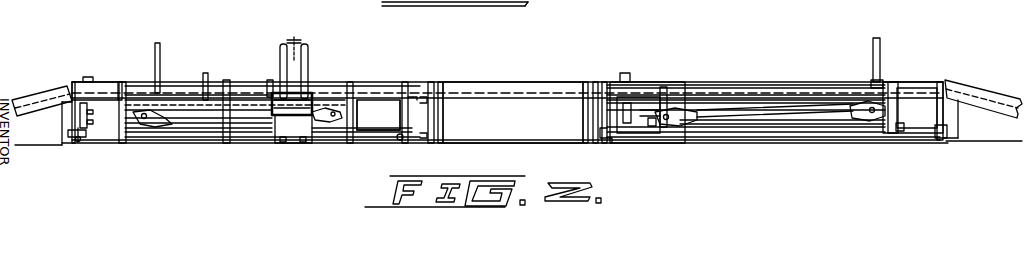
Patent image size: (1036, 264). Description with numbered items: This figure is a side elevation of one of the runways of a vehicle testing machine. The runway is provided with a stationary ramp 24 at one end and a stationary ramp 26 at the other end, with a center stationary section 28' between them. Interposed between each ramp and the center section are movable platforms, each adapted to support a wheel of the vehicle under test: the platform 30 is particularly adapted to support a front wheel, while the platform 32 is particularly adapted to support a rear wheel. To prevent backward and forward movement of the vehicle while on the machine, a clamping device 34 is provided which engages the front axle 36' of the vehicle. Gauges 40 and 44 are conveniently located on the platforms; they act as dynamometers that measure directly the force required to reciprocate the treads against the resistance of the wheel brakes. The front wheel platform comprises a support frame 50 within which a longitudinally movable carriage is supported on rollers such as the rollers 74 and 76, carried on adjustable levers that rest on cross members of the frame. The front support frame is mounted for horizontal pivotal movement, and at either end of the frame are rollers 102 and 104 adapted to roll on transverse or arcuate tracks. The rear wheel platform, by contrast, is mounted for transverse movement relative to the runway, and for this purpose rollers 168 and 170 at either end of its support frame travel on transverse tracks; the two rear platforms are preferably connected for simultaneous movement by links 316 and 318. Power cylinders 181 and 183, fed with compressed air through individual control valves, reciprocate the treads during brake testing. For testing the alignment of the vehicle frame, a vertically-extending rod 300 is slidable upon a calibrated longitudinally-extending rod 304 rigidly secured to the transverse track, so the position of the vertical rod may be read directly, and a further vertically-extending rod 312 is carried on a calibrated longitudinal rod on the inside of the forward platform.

The stationary ramp 24 is at (35, 100).
The gauge 40 is at (93, 77).
The vertically-extending rod 312 is at (162, 53).
The platform 30 is at (185, 97).
The front axle 36' is at (308, 35).
The clamping device 34 is at (310, 73).
The center stationary section 28' is at (513, 93).
The gauge 44 is at (630, 74).
The platform 32 is at (715, 97).
The longitudinally-extending rod 304 is at (788, 82).
The vertically-extending rod 300 is at (882, 53).
The stationary ramp 26 is at (980, 97).
The roller 104 is at (78, 140).
The roller 76 is at (143, 126).
The power cylinder 181 is at (205, 123).
The roller 74 is at (340, 126).
The support frame 50 is at (377, 131).
The roller 102 is at (400, 140).
The roller 168 is at (610, 143).
The link 316 is at (653, 126).
The power cylinder 183 is at (772, 122).
The link 318 is at (903, 130).
The roller 170 is at (938, 139).